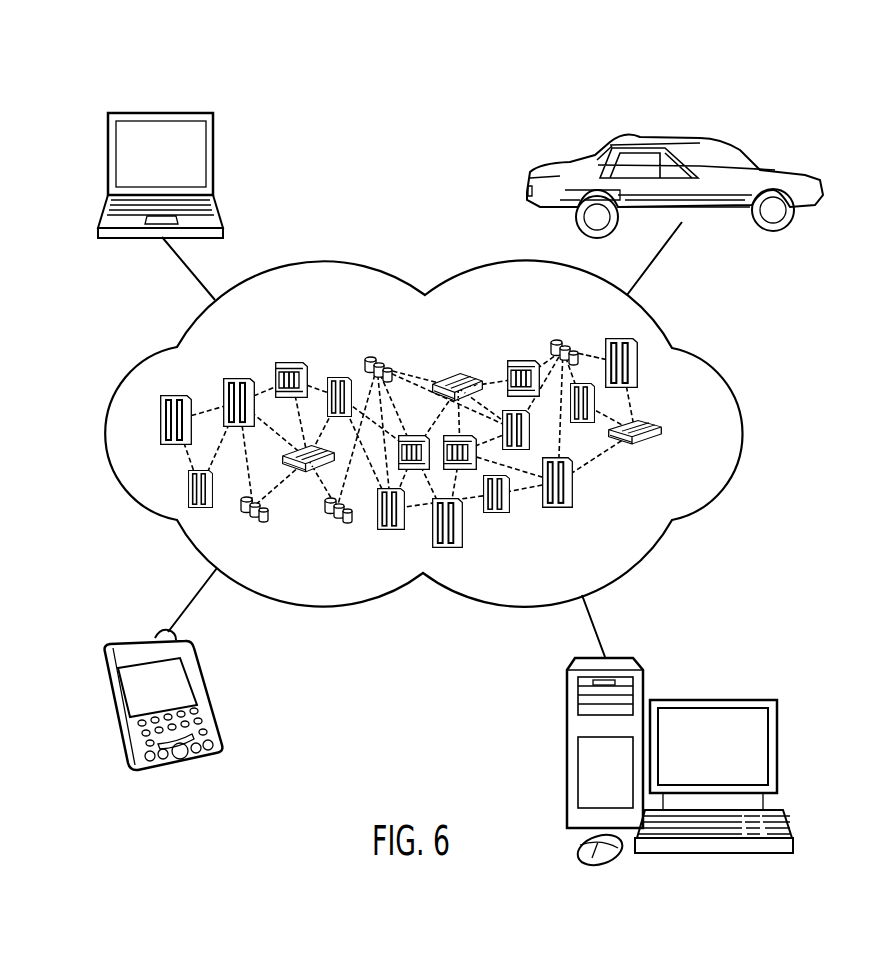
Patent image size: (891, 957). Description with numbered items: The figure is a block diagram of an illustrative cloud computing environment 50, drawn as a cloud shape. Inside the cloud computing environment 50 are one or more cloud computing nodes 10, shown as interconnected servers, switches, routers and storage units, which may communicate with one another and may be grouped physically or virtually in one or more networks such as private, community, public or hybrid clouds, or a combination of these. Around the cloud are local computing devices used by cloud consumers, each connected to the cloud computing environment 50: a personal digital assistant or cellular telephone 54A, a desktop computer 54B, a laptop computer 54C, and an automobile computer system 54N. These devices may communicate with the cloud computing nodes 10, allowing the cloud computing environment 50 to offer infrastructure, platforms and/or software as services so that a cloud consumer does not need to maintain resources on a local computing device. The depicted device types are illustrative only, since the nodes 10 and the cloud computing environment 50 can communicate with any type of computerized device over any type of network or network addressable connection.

The cloud computing node 10 is at (670, 432).
The cloud computing environment 50 is at (728, 350).
The personal digital assistant (PDA) or cellular telephone 54A is at (143, 645).
The desktop computer 54B is at (713, 698).
The laptop computer 54C is at (160, 112).
The automobile computer system 54N is at (655, 138).